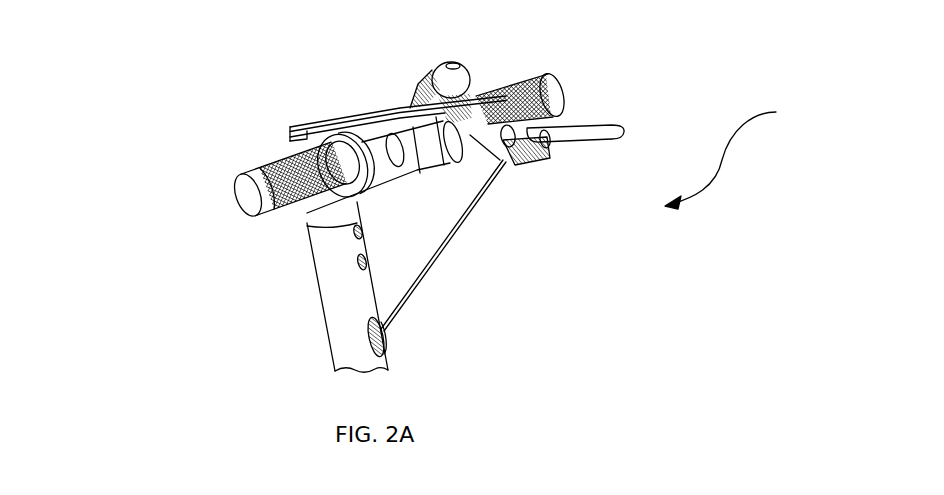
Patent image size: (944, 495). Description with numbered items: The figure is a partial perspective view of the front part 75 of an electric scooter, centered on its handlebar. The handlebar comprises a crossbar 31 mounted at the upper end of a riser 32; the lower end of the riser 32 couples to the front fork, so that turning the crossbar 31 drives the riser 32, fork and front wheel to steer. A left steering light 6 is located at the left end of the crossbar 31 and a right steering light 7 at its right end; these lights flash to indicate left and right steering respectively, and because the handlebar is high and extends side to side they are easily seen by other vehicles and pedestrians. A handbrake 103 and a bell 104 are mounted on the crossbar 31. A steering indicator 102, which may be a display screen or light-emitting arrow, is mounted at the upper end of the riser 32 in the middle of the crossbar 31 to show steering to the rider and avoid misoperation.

The left steering light 6 is at (556, 94).
The right steering light 7 is at (247, 197).
The crossbar 31 is at (277, 162).
The riser 32 is at (325, 285).
The front part 75 is at (734, 152).
The steering indicator 102 is at (345, 122).
The handbrake 103 is at (573, 133).
The bell 104 is at (442, 73).